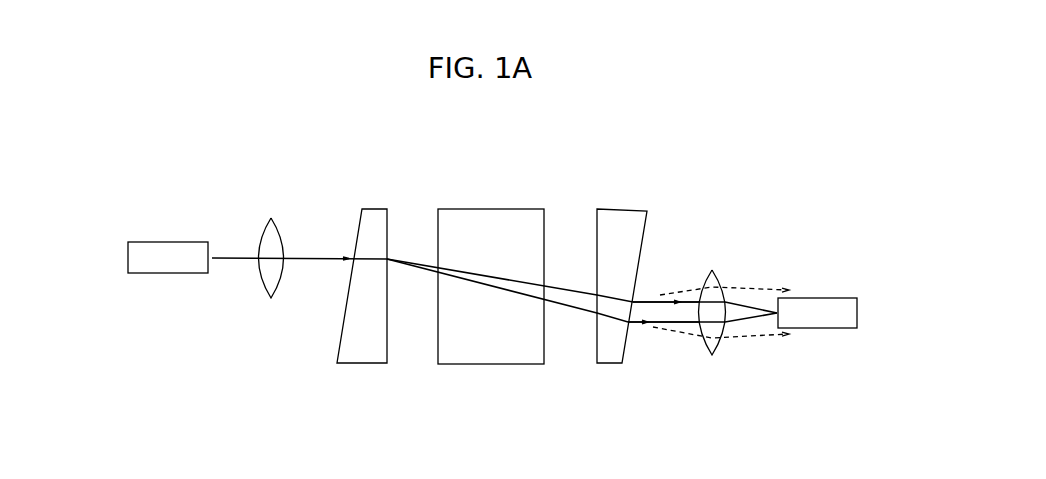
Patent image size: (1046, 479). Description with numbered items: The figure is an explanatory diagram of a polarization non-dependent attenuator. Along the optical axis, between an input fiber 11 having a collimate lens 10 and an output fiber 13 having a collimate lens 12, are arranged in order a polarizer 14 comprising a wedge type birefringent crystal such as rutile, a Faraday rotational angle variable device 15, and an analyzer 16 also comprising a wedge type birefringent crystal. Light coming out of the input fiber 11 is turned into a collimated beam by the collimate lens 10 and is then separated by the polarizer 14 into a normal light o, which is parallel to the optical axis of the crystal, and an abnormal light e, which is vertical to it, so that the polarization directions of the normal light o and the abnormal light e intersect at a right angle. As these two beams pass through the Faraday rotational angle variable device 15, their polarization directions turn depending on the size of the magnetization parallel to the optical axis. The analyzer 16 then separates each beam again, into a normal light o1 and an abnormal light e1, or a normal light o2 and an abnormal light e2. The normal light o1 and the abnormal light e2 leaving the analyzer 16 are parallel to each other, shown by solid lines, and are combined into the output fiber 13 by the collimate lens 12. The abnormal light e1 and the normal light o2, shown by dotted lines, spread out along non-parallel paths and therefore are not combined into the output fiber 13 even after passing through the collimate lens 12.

The collimate lens 10 is at (273, 297).
The input fiber 11 is at (168, 267).
The collimate lens 12 is at (715, 347).
The output fiber 13 is at (837, 327).
The polarizer 14 is at (363, 353).
The Faraday rotational angle variable device 15 is at (502, 352).
The analyzer 16 is at (610, 358).
The normal light o is at (422, 262).
The abnormal light e is at (428, 277).
The normal light o1 is at (667, 301).
The abnormal light e1 is at (688, 291).
The normal light o2 is at (692, 338).
The abnormal light e2 is at (657, 325).